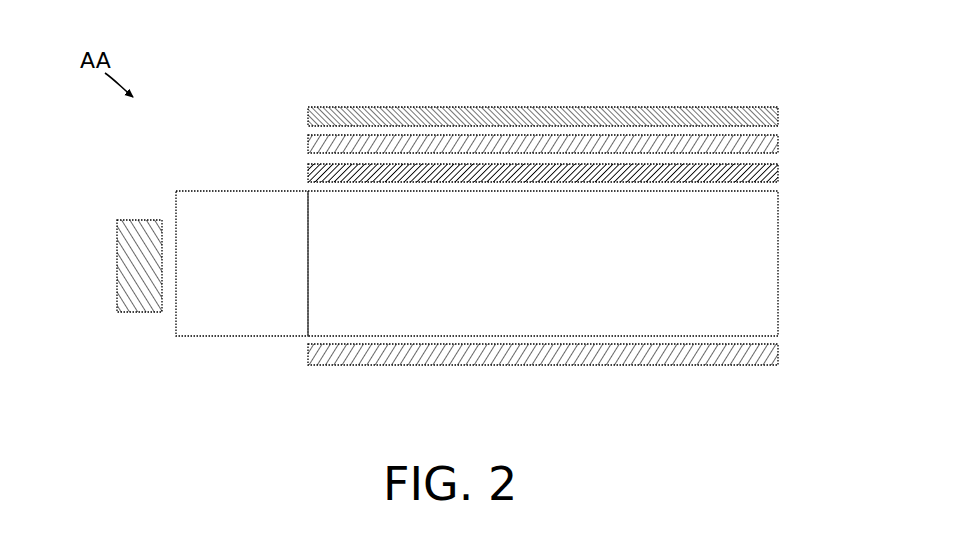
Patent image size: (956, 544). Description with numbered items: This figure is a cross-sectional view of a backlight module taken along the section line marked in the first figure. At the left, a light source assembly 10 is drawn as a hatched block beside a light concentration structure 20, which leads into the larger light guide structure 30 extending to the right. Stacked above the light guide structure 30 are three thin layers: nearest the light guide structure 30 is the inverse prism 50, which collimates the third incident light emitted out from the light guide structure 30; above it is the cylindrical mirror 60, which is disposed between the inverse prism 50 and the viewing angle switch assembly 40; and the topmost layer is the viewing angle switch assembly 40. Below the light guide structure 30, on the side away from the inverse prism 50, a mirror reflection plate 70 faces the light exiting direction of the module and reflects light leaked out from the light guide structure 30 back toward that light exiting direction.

The light source assembly 10 is at (116, 262).
The light concentration structure 20 is at (243, 337).
The light guide structure 30 is at (779, 263).
The viewing angle switch assembly 40 is at (779, 117).
The inverse prism 50 is at (779, 177).
The cylindrical mirror 60 is at (779, 145).
The mirror reflection plate 70 is at (779, 353).